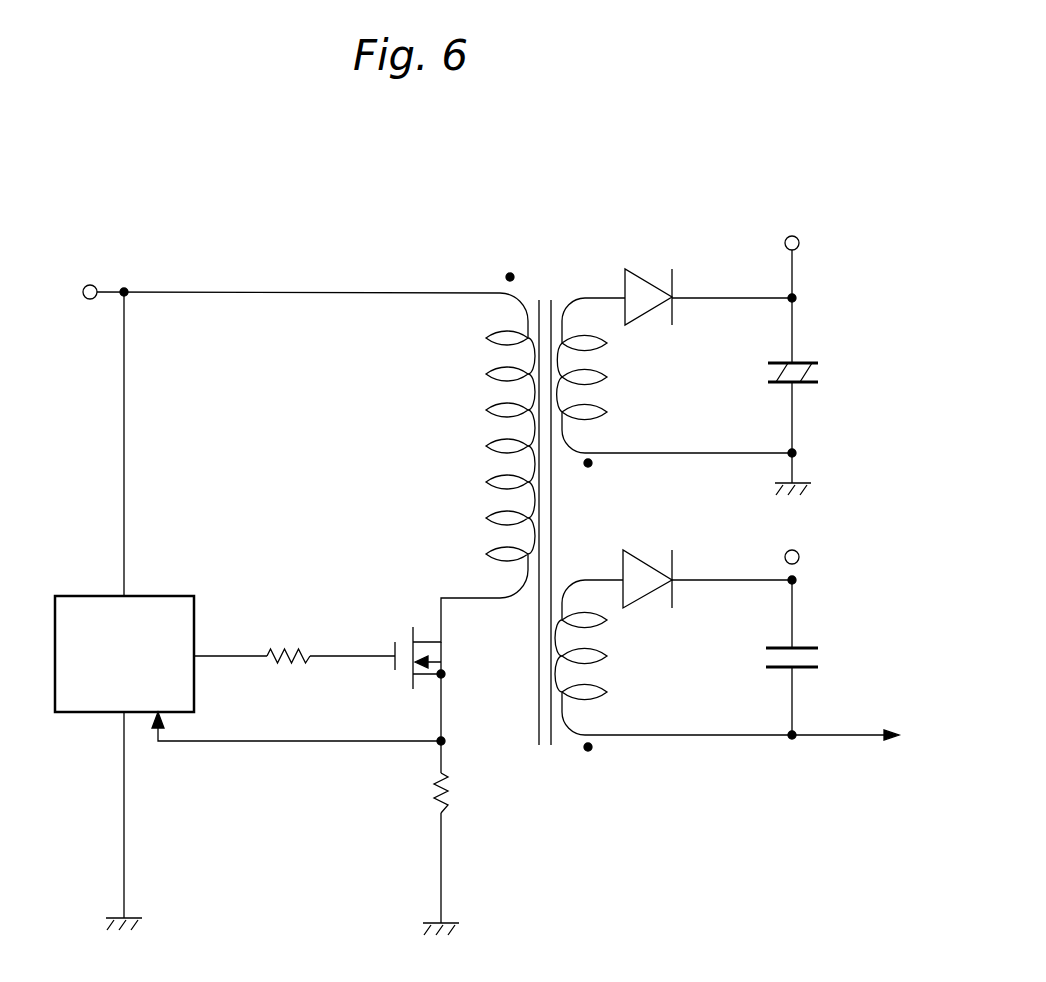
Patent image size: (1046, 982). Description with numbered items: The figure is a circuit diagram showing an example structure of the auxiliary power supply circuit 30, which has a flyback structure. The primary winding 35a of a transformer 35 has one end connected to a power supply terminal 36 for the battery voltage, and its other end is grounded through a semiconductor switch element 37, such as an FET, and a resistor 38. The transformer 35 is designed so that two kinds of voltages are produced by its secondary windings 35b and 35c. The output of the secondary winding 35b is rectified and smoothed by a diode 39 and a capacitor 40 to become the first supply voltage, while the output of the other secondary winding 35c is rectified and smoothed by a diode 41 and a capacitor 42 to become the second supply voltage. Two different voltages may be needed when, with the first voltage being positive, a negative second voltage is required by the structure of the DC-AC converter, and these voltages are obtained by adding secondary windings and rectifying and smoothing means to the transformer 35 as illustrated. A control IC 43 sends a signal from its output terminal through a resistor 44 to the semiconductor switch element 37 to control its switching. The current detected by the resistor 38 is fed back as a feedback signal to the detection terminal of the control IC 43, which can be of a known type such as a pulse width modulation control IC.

The auxiliary power supply circuit 30 is at (255, 205).
The transformer 35 is at (547, 280).
The primary winding 35a is at (503, 292).
The secondary winding 35b is at (585, 297).
The secondary winding 35c is at (598, 738).
The power supply terminal 36 is at (100, 290).
The semiconductor switch element 37 is at (418, 637).
The resistor 38 is at (432, 797).
The diode 39 is at (638, 327).
The capacitor 40 is at (797, 363).
The diode 41 is at (638, 609).
The capacitor 42 is at (801, 647).
The control IC 43 is at (85, 596).
The resistor 44 is at (292, 650).